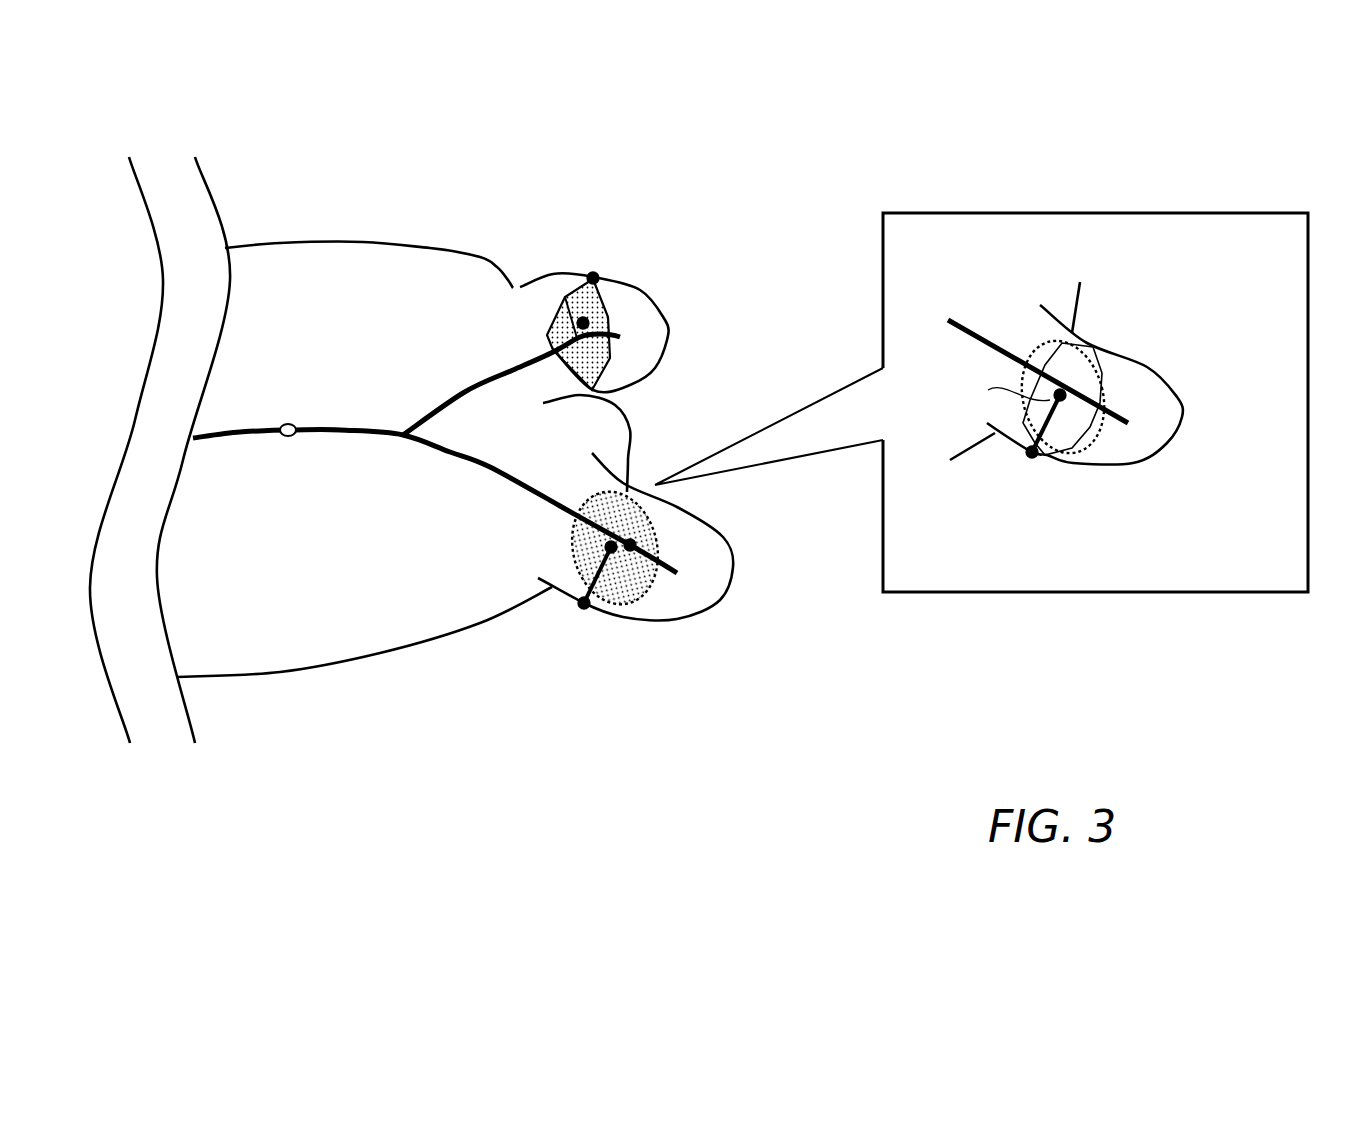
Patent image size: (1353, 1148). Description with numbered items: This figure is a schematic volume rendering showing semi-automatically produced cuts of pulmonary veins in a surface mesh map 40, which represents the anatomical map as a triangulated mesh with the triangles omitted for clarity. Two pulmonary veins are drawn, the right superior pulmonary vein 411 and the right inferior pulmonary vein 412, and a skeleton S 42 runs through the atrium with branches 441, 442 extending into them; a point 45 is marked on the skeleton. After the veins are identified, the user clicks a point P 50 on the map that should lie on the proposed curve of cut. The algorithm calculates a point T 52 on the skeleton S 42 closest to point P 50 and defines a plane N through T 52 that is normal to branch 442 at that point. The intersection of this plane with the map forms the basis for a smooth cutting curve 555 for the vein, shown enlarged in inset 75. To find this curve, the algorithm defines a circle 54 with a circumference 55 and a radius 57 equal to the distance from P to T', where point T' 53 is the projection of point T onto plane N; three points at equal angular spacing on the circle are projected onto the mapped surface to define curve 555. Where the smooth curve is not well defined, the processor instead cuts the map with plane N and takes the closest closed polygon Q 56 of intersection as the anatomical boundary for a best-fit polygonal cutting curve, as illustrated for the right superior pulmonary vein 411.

The surface mesh map 40 is at (344, 722).
The skeleton S 42 is at (296, 368).
The point S on ablation line 45 is at (288, 437).
The point P 50 is at (600, 273).
The point T 52 is at (625, 582).
The point T' 53 is at (583, 323).
The circle 54 is at (633, 565).
The circumference 55 is at (597, 505).
The closed polygon Q 56 is at (604, 301).
The radius ‖P−T'‖ 57 is at (603, 609).
The inset 75 is at (1262, 586).
The right superior pulmonary vein (RSPV) 411 is at (652, 369).
The right inferior pulmonary vein (RIPV) 412 is at (735, 577).
The branch of skeleton S 441 is at (565, 297).
The branch of skeleton S 442 is at (678, 571).
The smooth cutting curve 555 is at (1090, 443).